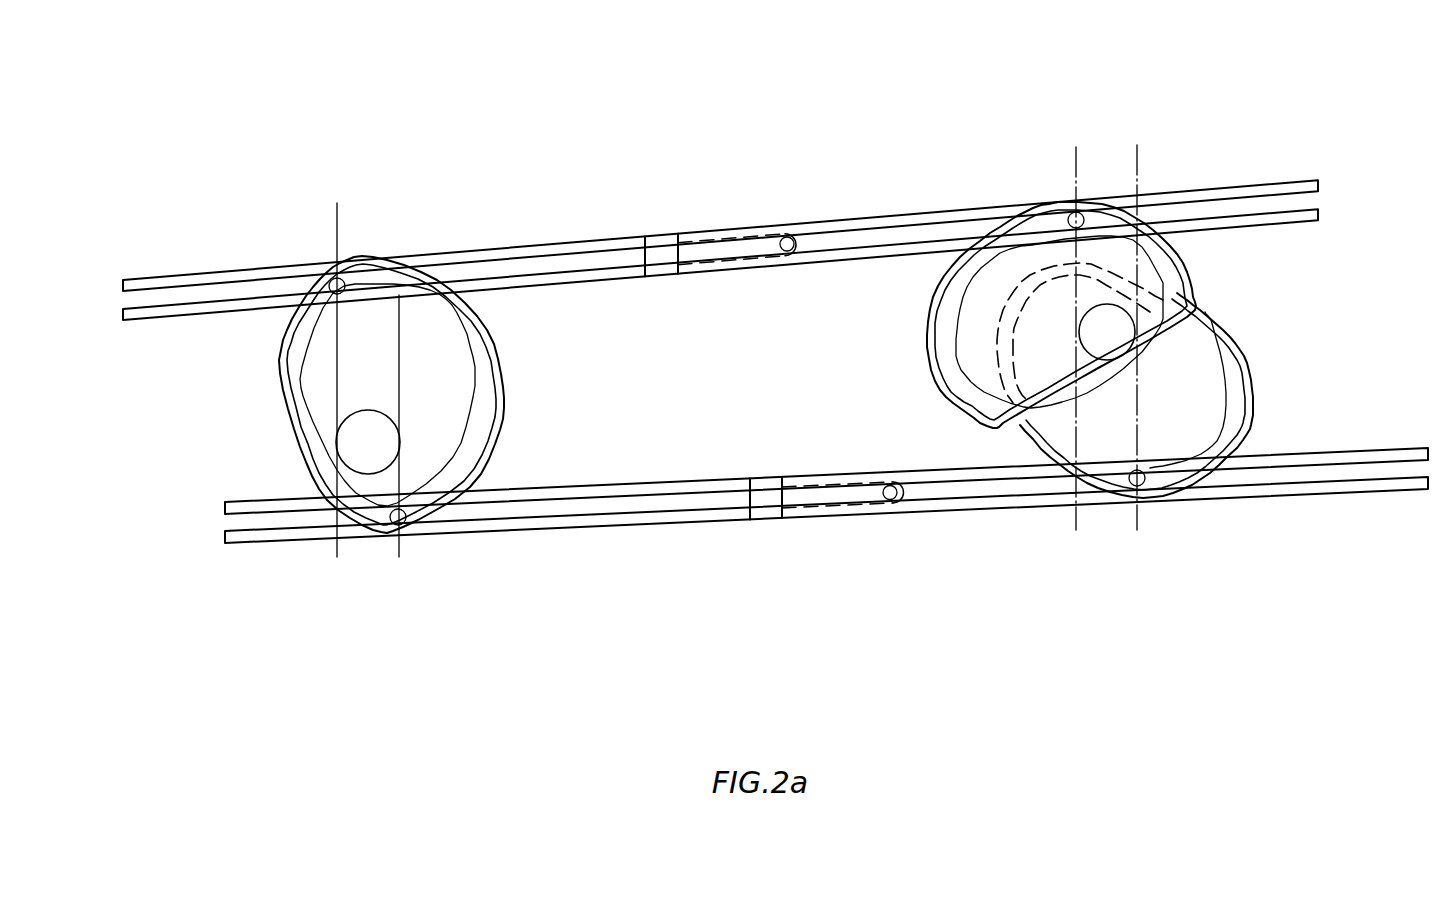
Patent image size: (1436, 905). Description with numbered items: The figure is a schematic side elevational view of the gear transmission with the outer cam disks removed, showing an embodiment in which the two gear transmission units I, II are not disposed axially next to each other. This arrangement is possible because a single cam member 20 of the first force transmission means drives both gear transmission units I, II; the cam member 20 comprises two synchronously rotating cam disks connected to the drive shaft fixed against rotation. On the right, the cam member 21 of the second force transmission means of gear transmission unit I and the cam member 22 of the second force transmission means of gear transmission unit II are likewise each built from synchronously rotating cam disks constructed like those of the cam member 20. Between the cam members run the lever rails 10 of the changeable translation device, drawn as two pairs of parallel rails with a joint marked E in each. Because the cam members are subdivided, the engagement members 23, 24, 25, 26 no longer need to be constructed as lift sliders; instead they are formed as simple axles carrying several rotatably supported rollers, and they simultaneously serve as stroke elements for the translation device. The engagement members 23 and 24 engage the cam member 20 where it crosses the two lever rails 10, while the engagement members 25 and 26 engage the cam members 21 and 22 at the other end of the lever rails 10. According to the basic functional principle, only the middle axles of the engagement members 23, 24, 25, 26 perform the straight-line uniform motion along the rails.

The lever rails 10 is at (702, 517).
The cam member 20 is at (440, 368).
The cam member 21 is at (983, 347).
The cam member 22 is at (1223, 360).
The engagement member 23 is at (342, 279).
The engagement member 24 is at (399, 525).
The engagement member 25 is at (1076, 213).
The engagement member 26 is at (1141, 486).
The joint pin E is at (887, 487).
The gear transmission unit I is at (790, 161).
The gear transmission unit II is at (852, 569).